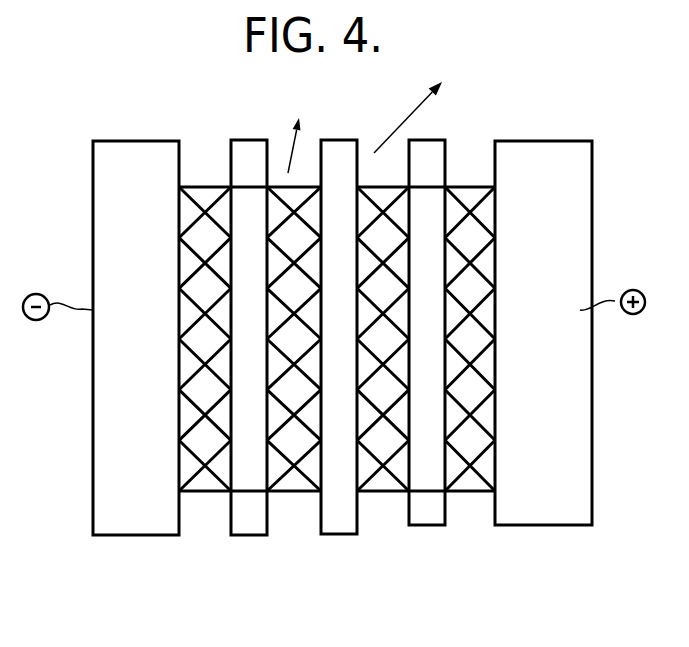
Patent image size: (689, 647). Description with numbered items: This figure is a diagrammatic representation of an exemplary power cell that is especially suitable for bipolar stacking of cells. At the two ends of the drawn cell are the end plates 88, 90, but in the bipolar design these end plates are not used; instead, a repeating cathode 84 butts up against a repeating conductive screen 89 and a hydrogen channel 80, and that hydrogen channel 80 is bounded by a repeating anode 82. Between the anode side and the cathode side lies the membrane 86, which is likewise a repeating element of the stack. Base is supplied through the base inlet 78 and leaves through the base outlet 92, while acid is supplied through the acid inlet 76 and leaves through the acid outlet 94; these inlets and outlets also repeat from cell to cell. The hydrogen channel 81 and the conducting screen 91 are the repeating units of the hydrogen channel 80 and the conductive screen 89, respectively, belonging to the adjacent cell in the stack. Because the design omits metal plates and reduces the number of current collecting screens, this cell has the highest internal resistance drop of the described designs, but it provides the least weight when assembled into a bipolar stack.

The acid inlet 76 is at (388, 503).
The base inlet 78 is at (297, 503).
The hydrogen channel 80 is at (208, 508).
The hydrogen channel 81 is at (478, 507).
The repeating anode 82 is at (245, 207).
The repeating cathode 84 is at (423, 197).
The membrane 86 is at (339, 155).
The end plate 88 is at (156, 353).
The conductive screen 89 is at (188, 413).
The end plate 90 is at (517, 358).
The conducting screen 91 is at (480, 407).
The base outlet 92 is at (280, 137).
The acid outlet 94 is at (396, 131).